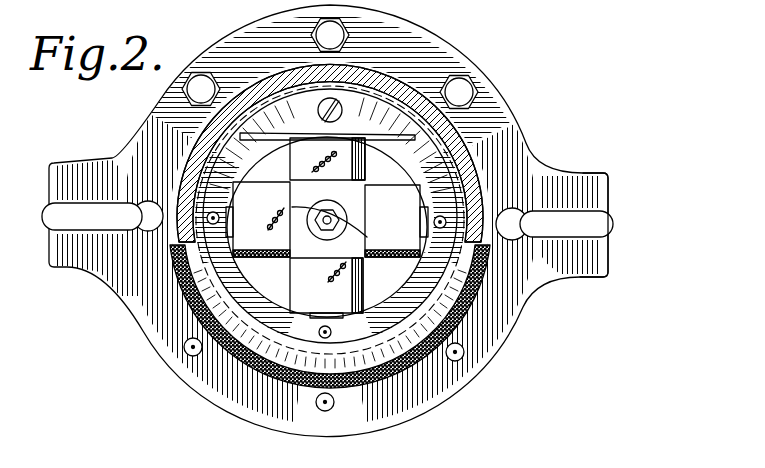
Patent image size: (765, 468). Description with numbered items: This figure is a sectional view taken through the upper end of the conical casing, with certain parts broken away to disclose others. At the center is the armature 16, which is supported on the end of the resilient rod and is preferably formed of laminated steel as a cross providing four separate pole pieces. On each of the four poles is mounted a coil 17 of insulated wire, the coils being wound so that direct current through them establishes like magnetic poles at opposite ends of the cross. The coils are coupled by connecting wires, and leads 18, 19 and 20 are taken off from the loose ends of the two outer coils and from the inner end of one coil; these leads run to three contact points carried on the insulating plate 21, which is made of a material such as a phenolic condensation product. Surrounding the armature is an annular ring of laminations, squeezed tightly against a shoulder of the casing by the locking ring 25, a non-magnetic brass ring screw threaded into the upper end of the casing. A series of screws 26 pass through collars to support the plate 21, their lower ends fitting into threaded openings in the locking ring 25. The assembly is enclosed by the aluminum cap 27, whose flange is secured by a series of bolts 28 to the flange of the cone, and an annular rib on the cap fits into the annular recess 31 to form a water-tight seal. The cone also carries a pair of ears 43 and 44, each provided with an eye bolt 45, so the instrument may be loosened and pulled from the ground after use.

The armature 16 is at (308, 200).
The coil 17 is at (395, 179).
The lead 18 is at (337, 277).
The lead 19 is at (338, 153).
The lead 20 is at (283, 207).
The insulating plate 21 is at (339, 117).
The locking ring 25 is at (417, 286).
The screw 26 is at (324, 117).
The cap 27 is at (149, 332).
The bolt 28 is at (470, 95).
The annular recess 31 is at (466, 314).
The ear 43 is at (609, 257).
The ear 44 is at (50, 255).
The eye bolt 45 is at (613, 229).